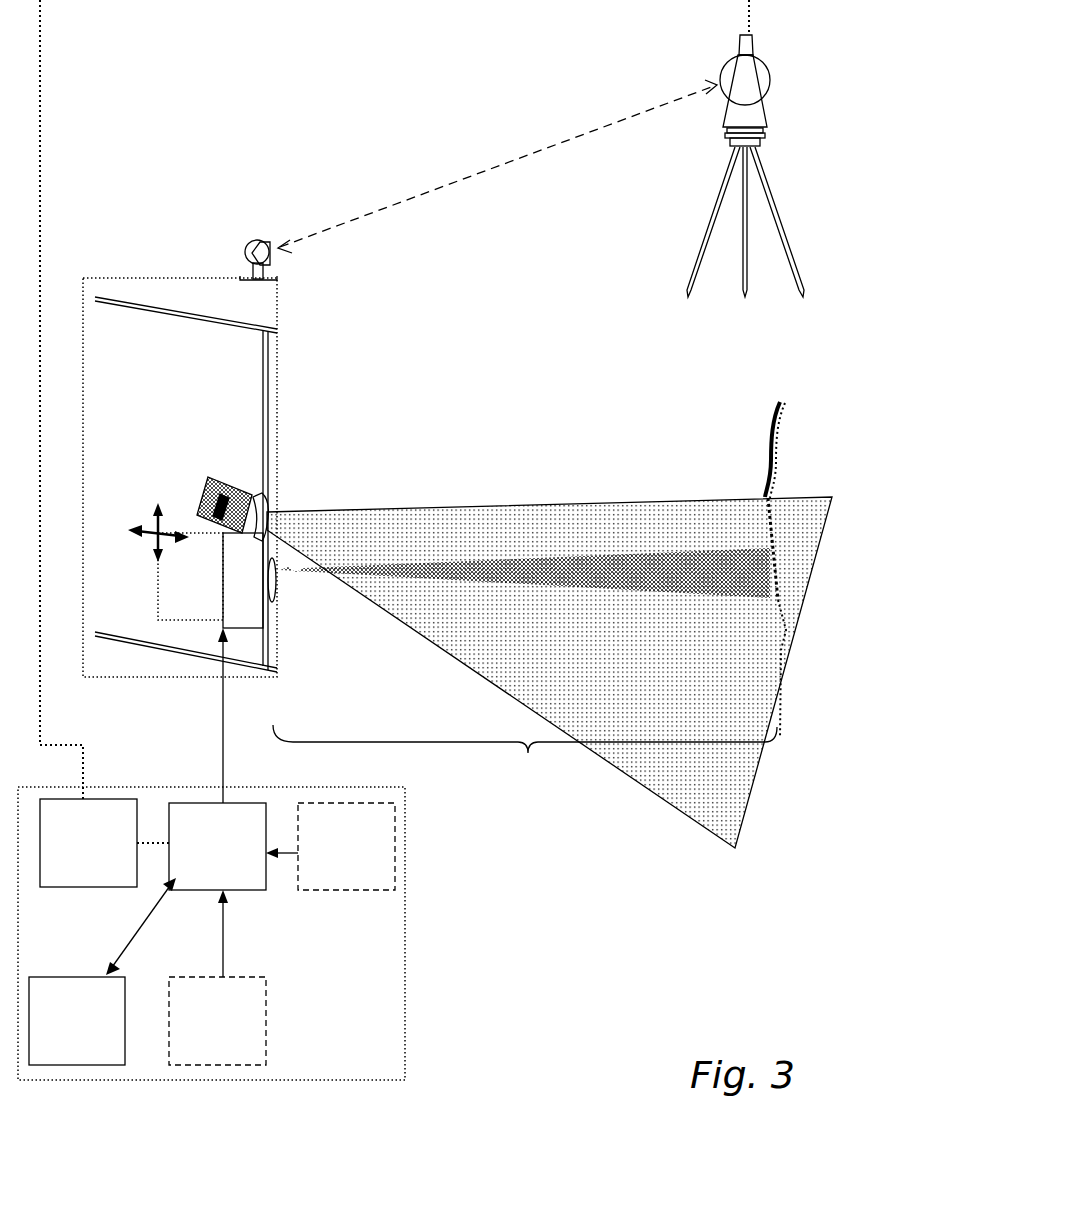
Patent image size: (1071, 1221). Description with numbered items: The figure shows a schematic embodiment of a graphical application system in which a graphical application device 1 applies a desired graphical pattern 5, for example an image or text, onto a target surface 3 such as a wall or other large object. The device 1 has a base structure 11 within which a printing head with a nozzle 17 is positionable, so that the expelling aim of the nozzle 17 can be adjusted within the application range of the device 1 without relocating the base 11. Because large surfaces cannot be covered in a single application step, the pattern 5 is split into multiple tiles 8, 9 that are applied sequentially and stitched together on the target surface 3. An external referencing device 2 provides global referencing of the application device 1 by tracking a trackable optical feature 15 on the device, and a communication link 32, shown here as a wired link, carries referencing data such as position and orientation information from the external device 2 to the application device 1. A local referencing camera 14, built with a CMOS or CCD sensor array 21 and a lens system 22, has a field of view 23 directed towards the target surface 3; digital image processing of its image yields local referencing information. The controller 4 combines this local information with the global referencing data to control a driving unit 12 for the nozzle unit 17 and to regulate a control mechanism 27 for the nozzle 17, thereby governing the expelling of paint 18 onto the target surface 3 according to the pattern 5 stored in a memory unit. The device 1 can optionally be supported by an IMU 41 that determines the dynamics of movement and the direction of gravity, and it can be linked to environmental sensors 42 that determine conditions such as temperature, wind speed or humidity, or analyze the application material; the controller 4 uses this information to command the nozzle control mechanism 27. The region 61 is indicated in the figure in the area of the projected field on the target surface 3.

The graphical application device 1 is at (100, 270).
The base structure 11 is at (137, 303).
The trackable optical feature 15 is at (260, 243).
The local referencing camera 14 is at (210, 477).
The sensor array 21 is at (242, 497).
The lens system 22 is at (263, 510).
The driving unit 12 is at (207, 618).
The control mechanism 27 is at (258, 612).
The nozzle 17 is at (275, 592).
The field of view 23 is at (440, 507).
The paint 18 is at (482, 563).
The tile 8 is at (767, 442).
The target surface 3 is at (790, 408).
The tile 9 is at (780, 705).
The external referencing device 2 is at (753, 62).
The measuring region 61 is at (532, 765).
The communication link 32 is at (107, 852).
The controller 4 is at (228, 853).
The IMU 41 is at (363, 853).
The desired graphical pattern 5 is at (88, 1027).
The environmental sensors 42 is at (237, 1027).